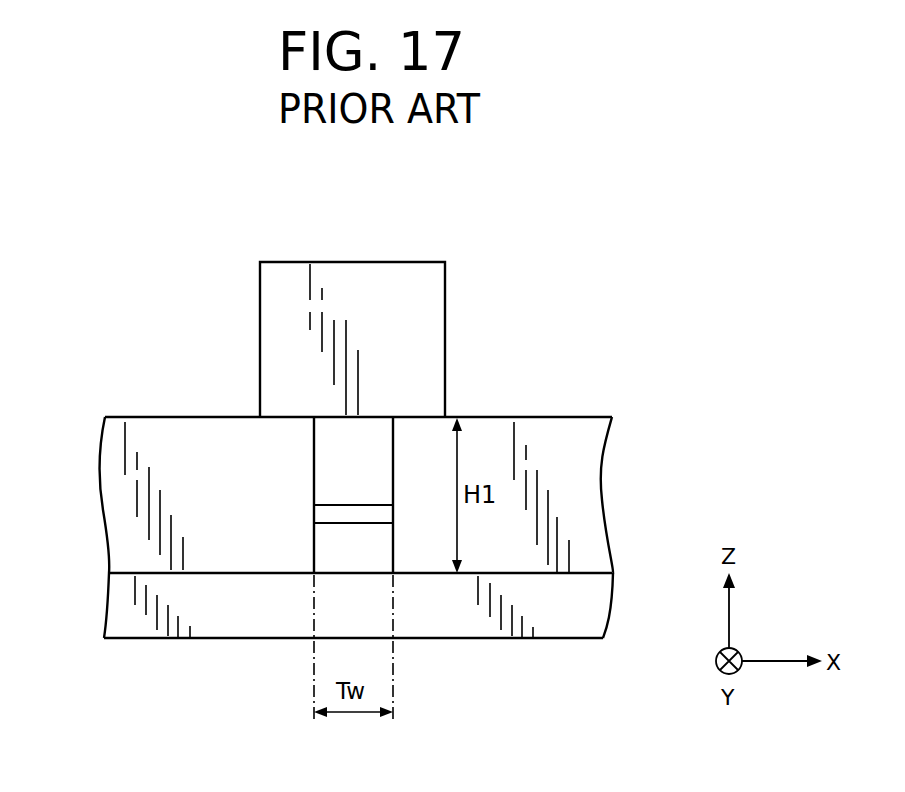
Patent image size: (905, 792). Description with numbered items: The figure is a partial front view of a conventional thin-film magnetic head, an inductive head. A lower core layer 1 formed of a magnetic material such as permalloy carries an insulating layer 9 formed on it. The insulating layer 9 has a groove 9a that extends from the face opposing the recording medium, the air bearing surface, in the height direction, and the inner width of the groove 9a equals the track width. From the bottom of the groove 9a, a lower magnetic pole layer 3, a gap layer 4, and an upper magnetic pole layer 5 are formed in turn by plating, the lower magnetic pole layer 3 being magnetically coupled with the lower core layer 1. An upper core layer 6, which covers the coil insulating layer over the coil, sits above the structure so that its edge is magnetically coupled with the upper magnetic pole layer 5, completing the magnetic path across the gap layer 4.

The lower core layer 1 is at (587, 610).
The lower magnetic pole layer 3 is at (333, 545).
The gap layer 4 is at (333, 516).
The upper magnetic pole layer 5 is at (333, 469).
The upper core layer 6 is at (425, 293).
The insulating layer 9 is at (120, 513).
The groove 9a is at (367, 566).